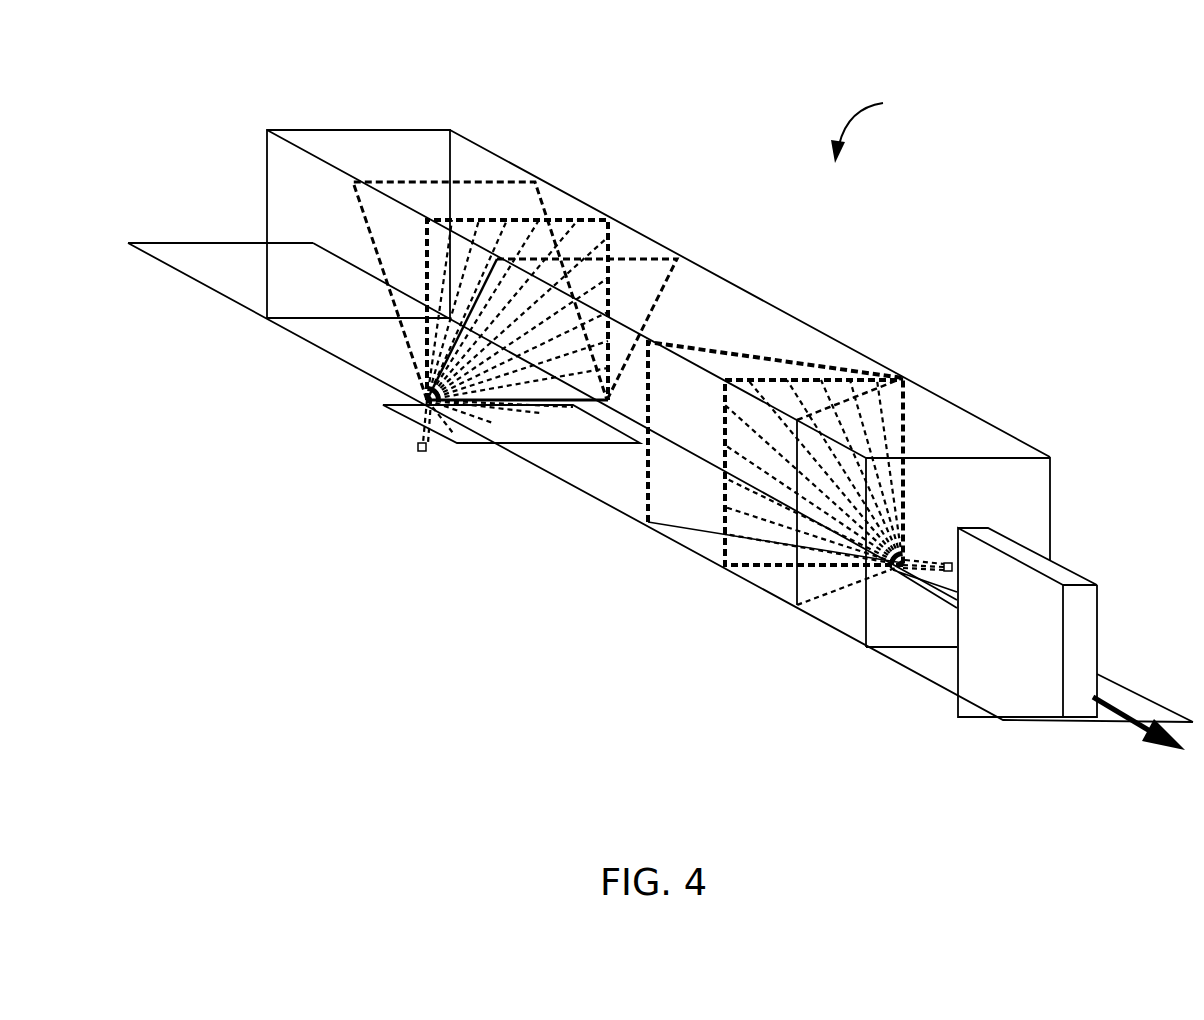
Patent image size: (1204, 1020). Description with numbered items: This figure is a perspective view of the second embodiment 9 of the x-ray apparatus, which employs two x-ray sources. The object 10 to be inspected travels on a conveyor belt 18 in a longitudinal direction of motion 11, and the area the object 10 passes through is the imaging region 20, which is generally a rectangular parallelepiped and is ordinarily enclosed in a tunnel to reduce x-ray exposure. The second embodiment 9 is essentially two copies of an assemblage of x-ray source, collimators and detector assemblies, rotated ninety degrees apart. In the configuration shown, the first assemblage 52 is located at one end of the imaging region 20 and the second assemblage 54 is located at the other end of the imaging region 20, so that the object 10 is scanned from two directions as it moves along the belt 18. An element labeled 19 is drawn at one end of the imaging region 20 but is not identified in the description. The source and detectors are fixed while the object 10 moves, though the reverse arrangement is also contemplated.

The second embodiment 9 is at (874, 123).
The object 10 is at (1098, 620).
The longitudinal direction of motion 11 is at (1130, 722).
The conveyor belt 18 is at (587, 465).
The input light cube 19 is at (367, 140).
The imaging region 20 is at (708, 308).
The first assemblage 52 is at (358, 384).
The second assemblage 54 is at (793, 622).